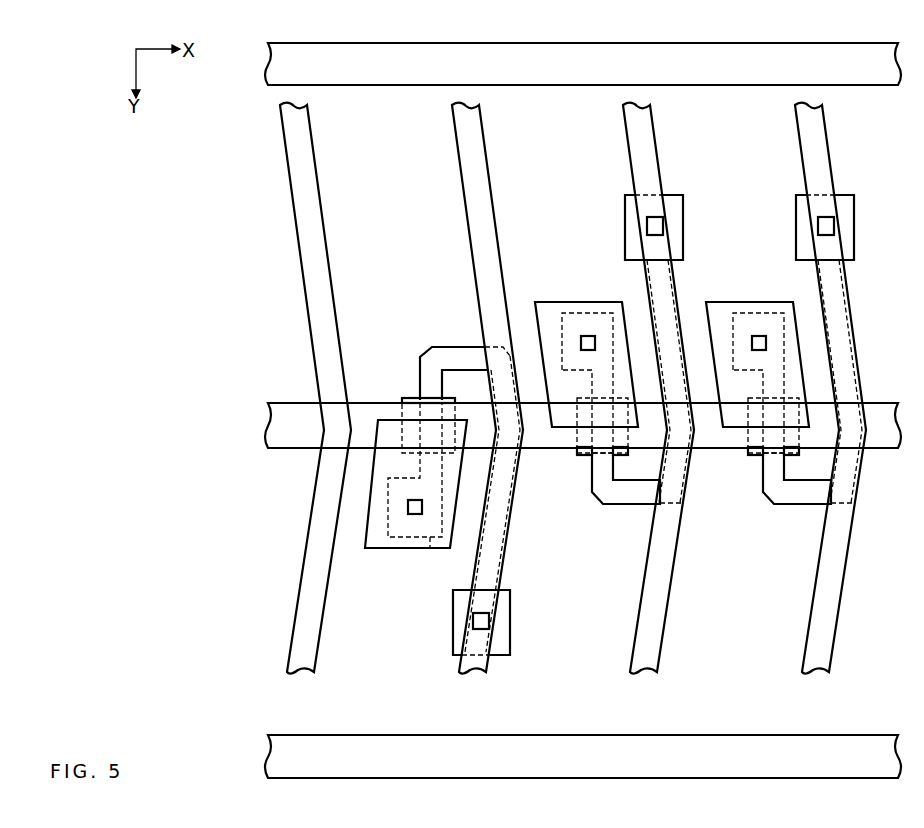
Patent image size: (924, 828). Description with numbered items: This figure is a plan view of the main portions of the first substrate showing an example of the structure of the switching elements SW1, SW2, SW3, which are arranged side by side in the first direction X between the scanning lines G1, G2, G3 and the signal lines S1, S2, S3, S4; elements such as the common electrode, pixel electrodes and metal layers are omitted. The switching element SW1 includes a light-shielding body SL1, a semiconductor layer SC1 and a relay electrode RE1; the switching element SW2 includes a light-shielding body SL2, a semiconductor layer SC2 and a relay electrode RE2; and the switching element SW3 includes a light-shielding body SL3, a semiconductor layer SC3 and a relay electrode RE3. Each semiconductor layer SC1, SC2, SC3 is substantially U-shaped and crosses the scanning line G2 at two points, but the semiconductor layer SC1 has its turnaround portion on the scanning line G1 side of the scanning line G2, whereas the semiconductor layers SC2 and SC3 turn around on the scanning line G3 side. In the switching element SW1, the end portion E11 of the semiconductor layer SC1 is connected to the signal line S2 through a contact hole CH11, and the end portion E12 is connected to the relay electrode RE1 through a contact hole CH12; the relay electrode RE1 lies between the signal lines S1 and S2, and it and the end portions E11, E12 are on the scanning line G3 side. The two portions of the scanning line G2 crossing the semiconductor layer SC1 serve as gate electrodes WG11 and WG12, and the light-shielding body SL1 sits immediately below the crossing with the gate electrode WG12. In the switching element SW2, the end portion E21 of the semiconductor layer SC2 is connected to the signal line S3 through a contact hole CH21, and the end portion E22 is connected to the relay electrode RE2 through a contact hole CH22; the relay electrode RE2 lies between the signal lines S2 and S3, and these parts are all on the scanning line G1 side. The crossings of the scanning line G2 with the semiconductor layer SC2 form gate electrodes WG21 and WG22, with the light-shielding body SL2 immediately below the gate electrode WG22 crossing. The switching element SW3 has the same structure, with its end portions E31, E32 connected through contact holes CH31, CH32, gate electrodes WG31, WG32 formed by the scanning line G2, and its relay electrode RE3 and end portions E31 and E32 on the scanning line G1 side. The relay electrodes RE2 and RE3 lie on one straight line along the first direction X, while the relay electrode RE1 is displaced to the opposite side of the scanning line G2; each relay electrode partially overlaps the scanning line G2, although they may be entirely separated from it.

The scanning line G1 is at (268, 60).
The scanning line G2 is at (268, 422).
The scanning line G3 is at (268, 752).
The signal line S1 is at (292, 675).
The signal line S2 is at (472, 672).
The signal line S3 is at (645, 672).
The signal line S4 is at (817, 672).
The switching element SW1 is at (472, 337).
The switching element SW2 is at (598, 505).
The switching element SW3 is at (768, 505).
The semiconductor layer SC1 is at (420, 345).
The semiconductor layer SC2 is at (610, 506).
The semiconductor layer SC3 is at (781, 506).
The light-shielding body SL1 is at (410, 398).
The light-shielding body SL2 is at (576, 455).
The light-shielding body SL3 is at (747, 455).
The relay electrode RE1 is at (366, 535).
The relay electrode RE2 is at (556, 430).
The relay electrode RE3 is at (727, 430).
The end portion E11 is at (453, 625).
The end portion E12 is at (430, 550).
The end portion E21 is at (636, 196).
The end portion E22 is at (600, 312).
The end portion E31 is at (807, 196).
The end portion E32 is at (771, 312).
The contact hole CH11 is at (482, 630).
The contact hole CH12 is at (413, 516).
The contact hole CH21 is at (655, 217).
The contact hole CH22 is at (588, 336).
The contact hole CH31 is at (826, 217).
The contact hole CH32 is at (759, 336).
The gate electrode WG11 is at (505, 500).
The gate electrode WG12 is at (433, 400).
The gate electrode WG21 is at (683, 505).
The gate electrode WG22 is at (607, 401).
The gate electrode WG31 is at (854, 505).
The gate electrode WG32 is at (778, 401).